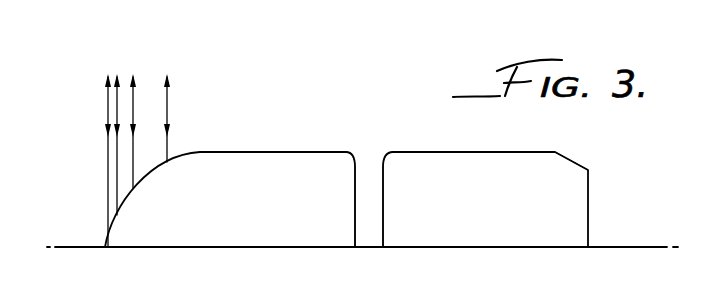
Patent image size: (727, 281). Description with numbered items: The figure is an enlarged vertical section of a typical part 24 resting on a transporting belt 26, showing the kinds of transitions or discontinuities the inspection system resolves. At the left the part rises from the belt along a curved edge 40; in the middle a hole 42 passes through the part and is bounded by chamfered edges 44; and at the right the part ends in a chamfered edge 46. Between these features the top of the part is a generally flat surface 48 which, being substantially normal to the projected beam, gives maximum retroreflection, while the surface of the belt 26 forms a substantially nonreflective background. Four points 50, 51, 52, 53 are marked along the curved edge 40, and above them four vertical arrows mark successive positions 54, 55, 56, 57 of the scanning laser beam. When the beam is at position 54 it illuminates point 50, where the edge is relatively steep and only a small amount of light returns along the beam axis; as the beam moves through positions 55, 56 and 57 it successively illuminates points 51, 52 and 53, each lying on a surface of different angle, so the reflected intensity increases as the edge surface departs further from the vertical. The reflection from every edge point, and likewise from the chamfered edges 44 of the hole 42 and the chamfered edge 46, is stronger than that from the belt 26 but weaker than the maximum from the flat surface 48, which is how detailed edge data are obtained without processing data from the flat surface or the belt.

The part 24 is at (434, 137).
The transporting belt 26 is at (630, 246).
The curved edge 40 is at (128, 195).
The hole 42 is at (362, 172).
The chamfered edges 44 is at (362, 172).
The chamfered edge 46 is at (578, 164).
The flat surface 48 is at (227, 146).
The point 50 is at (108, 236).
The point 51 is at (116, 213).
The point 52 is at (135, 187).
The point 53 is at (167, 163).
The beam position 54 is at (104, 95).
The beam position 55 is at (117, 103).
The beam position 56 is at (140, 97).
The beam position 57 is at (170, 102).